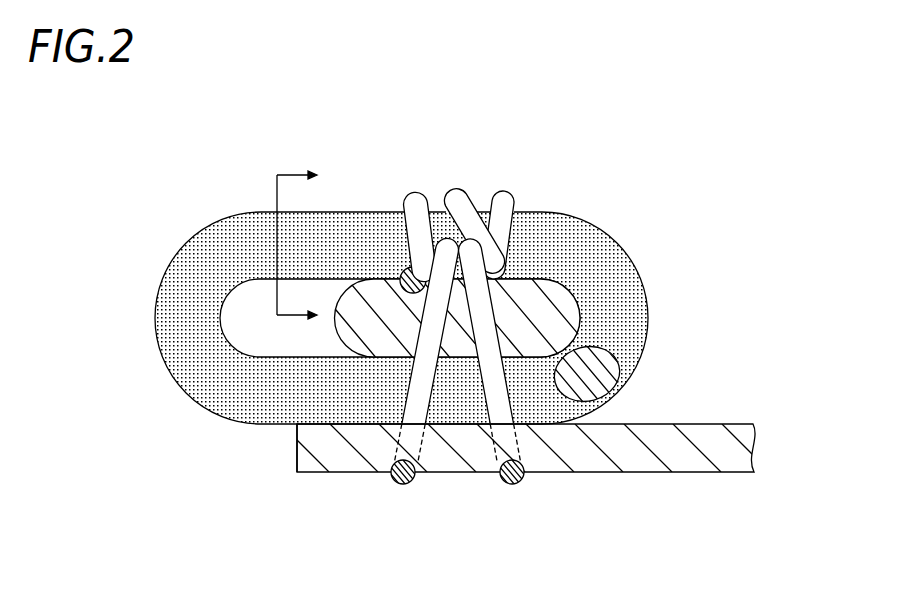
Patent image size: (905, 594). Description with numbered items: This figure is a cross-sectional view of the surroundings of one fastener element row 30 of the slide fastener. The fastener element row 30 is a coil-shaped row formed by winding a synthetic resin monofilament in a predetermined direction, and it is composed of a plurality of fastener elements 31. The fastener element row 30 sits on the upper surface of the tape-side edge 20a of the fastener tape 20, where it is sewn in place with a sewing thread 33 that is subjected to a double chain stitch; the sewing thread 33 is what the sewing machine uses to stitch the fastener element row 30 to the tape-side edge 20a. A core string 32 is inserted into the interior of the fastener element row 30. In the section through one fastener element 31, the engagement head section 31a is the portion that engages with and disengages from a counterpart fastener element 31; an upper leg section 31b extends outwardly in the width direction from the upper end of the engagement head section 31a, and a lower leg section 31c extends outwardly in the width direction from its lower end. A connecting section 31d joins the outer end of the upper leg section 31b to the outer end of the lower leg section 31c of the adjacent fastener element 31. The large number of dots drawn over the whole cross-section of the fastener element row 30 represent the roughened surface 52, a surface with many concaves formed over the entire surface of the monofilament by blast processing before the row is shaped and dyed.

The fastener tape 20 is at (525, 484).
The tape-side edge 20a is at (297, 446).
The fastener element row 30 is at (396, 336).
The fastener element 31 is at (396, 336).
The engagement head section 31a is at (182, 313).
The upper leg section 31b is at (367, 240).
The lower leg section 31c is at (378, 393).
The connecting section 31d is at (617, 313).
The core string 32 is at (538, 303).
The sewing thread 33 is at (503, 197).
The roughened surface 52 is at (248, 219).